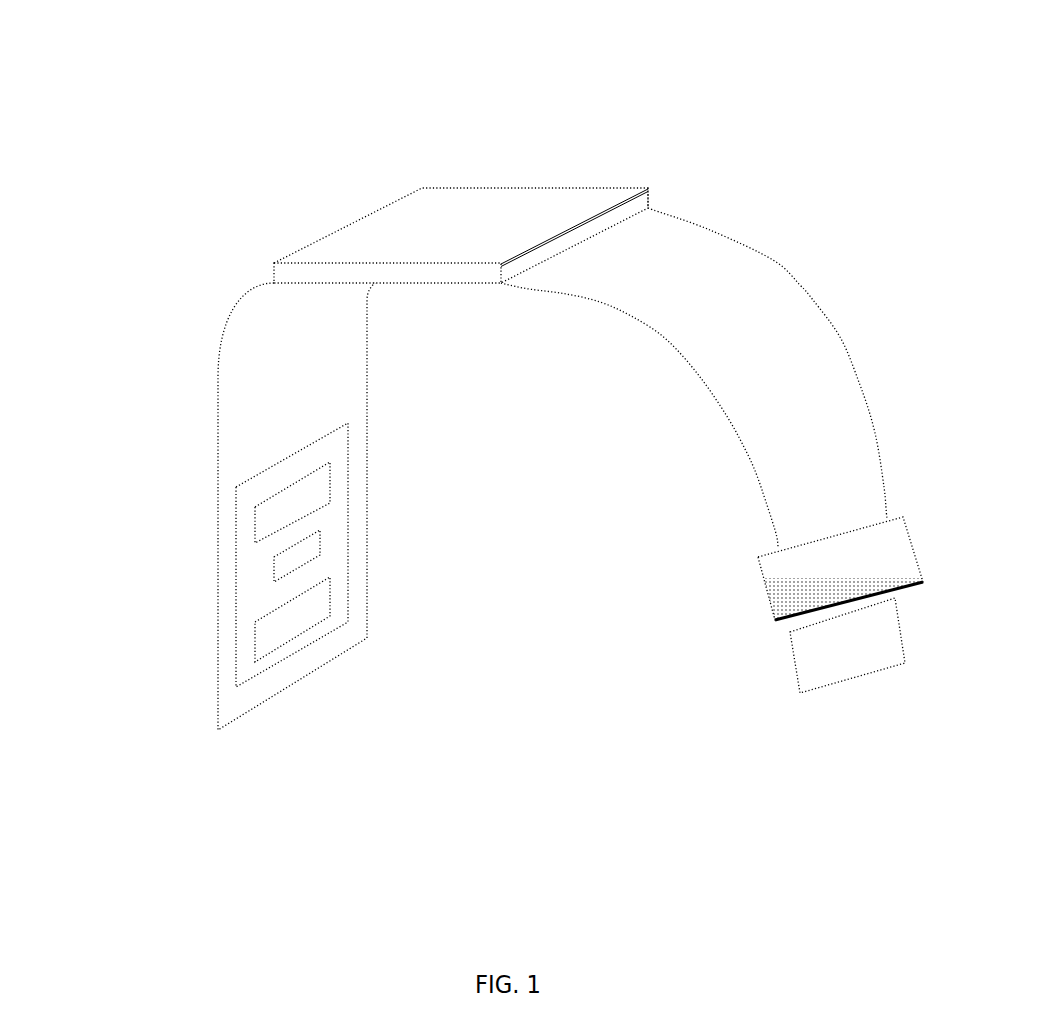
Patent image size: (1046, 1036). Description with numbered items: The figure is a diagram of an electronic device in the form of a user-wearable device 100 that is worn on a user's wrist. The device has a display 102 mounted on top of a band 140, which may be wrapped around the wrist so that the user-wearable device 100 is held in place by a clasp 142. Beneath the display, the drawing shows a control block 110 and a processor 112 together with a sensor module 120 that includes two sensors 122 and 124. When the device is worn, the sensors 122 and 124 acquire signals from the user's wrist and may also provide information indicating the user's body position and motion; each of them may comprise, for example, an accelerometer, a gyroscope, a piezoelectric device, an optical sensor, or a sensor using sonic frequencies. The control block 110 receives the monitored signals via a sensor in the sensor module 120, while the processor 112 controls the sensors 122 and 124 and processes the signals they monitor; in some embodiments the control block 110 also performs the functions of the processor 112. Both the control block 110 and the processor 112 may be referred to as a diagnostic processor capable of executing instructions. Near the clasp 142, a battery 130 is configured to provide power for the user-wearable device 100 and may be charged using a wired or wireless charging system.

The user-wearable device 100 is at (498, 387).
The display 102 is at (402, 217).
The control block 110 is at (463, 287).
The processor 112 is at (320, 532).
The sensor module 120 is at (350, 593).
The sensor 122 is at (257, 507).
The sensor 124 is at (255, 627).
The battery 130 is at (838, 660).
The band 140 is at (255, 333).
The clasp 142 is at (770, 607).